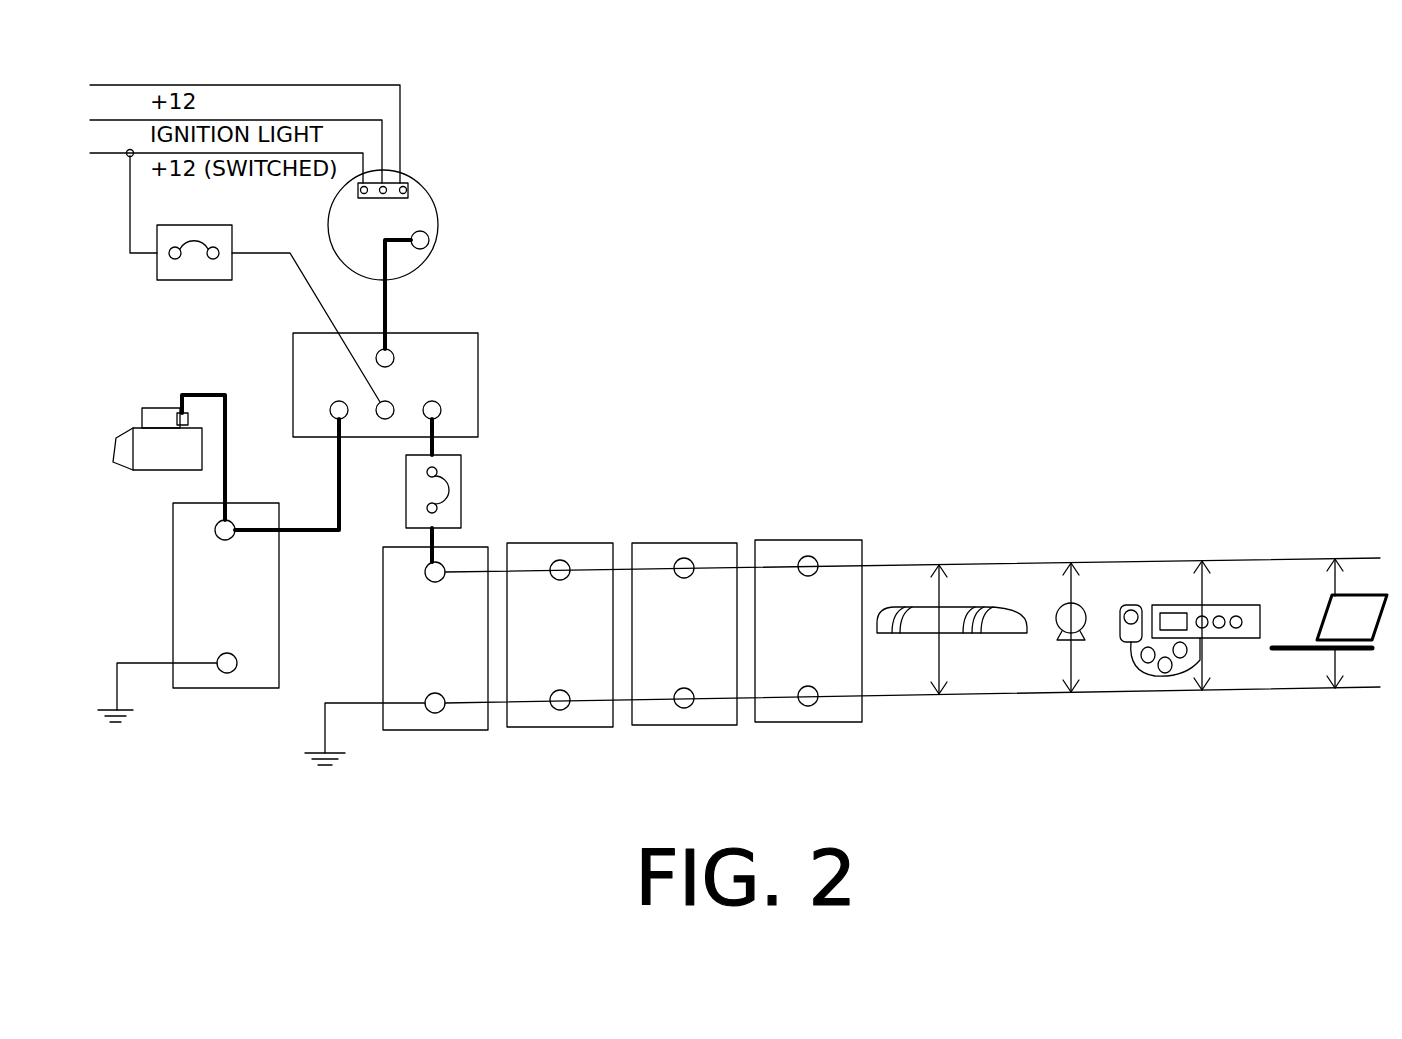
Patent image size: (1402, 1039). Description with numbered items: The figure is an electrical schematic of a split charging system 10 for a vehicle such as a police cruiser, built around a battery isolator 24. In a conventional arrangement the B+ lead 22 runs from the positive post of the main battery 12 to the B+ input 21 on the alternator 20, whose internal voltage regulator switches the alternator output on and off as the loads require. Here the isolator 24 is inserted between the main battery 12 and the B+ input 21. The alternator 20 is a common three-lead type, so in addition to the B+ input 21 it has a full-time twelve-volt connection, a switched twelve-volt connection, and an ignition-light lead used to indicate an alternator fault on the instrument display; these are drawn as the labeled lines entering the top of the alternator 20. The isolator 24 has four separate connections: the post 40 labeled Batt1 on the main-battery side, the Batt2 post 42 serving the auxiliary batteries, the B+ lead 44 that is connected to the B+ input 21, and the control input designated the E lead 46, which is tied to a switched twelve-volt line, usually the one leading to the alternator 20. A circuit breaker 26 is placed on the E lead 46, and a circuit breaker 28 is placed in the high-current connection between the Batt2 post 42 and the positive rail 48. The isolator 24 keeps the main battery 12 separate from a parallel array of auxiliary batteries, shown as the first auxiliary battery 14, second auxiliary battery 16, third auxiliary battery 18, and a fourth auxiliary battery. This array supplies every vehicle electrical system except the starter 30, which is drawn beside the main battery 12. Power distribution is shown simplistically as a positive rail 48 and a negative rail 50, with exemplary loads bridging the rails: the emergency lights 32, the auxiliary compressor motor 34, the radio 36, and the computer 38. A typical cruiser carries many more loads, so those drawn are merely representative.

The electrical system 10 is at (838, 302).
The main battery 12 is at (228, 690).
The first auxiliary battery 14 is at (435, 732).
The second auxiliary battery 16 is at (562, 728).
The third auxiliary battery 18 is at (684, 728).
The alternator 20 is at (433, 193).
The B+ input 21 is at (429, 237).
The B+ lead 22 is at (388, 268).
The isolator 24 is at (480, 372).
The circuit breaker 26 is at (195, 283).
The circuit breaker 28 is at (462, 488).
The starter 30 is at (157, 472).
The emergency lights 32 is at (988, 603).
The auxiliary compressor motor 34 is at (1085, 600).
The radio 36 is at (1215, 605).
The computer 38 is at (1362, 597).
The BATT 1 terminal 40 is at (333, 404).
The Batt2 post 42 is at (441, 407).
The B+ lead 44 is at (391, 350).
The E lead 46 is at (384, 421).
The positive rail 48 is at (897, 563).
The negative rail 50 is at (1003, 695).